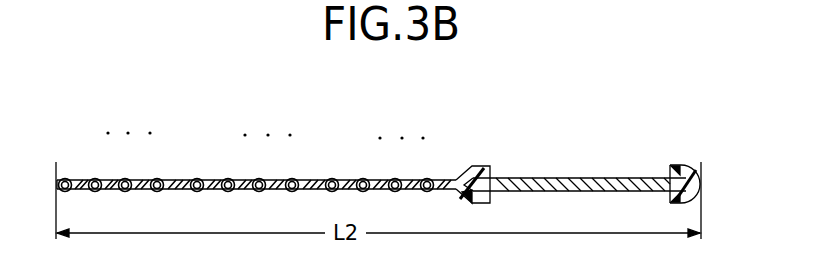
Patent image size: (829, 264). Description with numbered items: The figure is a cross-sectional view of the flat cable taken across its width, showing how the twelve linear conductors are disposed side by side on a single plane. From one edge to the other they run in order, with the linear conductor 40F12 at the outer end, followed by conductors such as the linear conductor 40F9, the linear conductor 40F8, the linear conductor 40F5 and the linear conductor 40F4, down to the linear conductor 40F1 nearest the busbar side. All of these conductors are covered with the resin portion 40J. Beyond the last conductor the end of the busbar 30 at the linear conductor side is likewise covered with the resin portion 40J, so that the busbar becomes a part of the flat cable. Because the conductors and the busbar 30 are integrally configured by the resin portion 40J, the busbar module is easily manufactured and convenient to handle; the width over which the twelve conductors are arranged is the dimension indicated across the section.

The linear conductor 40F12 is at (67, 179).
The linear conductor 40F9 is at (159, 179).
The linear conductor 40F8 is at (199, 179).
The linear conductor 40F5 is at (294, 179).
The linear conductor 40F4 is at (334, 179).
The linear conductor 40F1 is at (429, 179).
The resin portion 40J is at (480, 167).
The busbar 30 is at (563, 186).